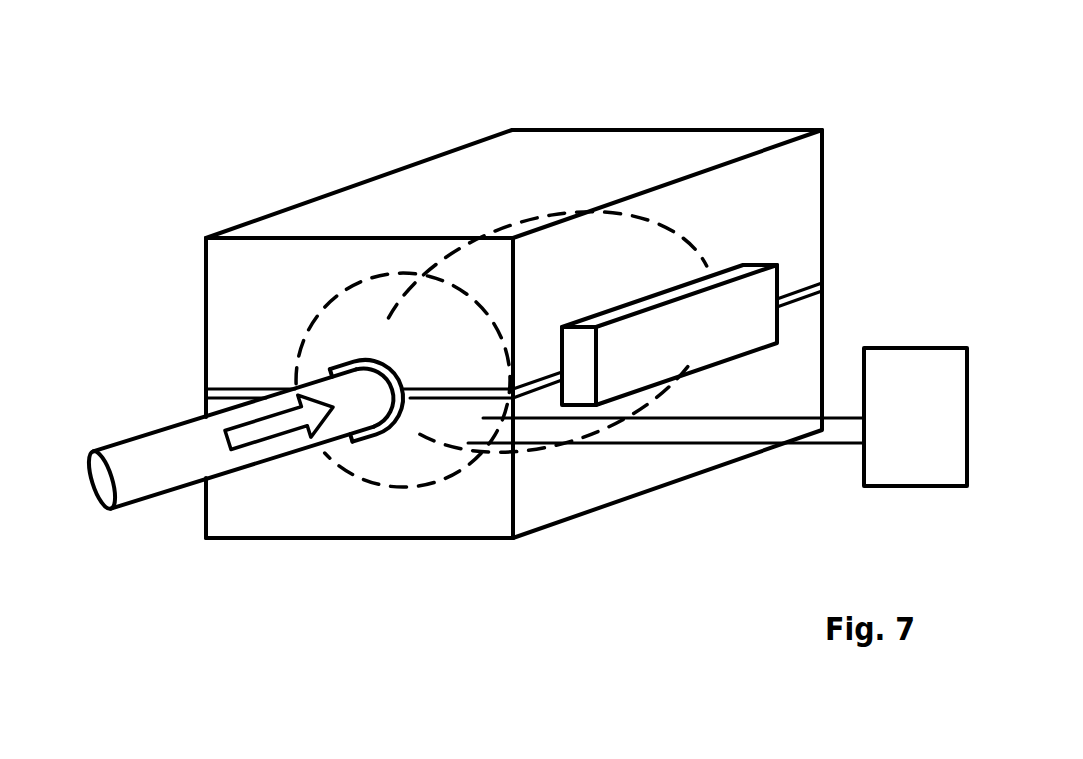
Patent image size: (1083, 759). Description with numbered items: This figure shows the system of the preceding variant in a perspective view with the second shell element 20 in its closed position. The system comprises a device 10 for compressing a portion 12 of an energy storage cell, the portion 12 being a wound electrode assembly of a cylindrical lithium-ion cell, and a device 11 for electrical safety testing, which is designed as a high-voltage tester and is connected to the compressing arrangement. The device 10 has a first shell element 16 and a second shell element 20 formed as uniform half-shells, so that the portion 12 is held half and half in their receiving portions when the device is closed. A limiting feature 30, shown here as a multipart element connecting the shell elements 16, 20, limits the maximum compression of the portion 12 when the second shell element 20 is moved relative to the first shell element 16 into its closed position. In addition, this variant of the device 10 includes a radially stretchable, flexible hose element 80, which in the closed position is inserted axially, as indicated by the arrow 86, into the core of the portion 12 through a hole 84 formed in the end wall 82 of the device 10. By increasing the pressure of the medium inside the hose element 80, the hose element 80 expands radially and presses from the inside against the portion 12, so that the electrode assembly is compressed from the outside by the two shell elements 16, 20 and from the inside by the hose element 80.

The device for compressing 10 is at (684, 126).
The device for electrical safety testing 11 is at (847, 337).
The portion of an energy storage cell 12 is at (453, 268).
The first shell element 16 is at (380, 538).
The second shell element 20 is at (206, 360).
The limiting feature 30 is at (745, 312).
The hose element 80 is at (176, 490).
The end wall 82 is at (233, 319).
The hole 84 is at (350, 353).
The arrow 86 is at (268, 437).